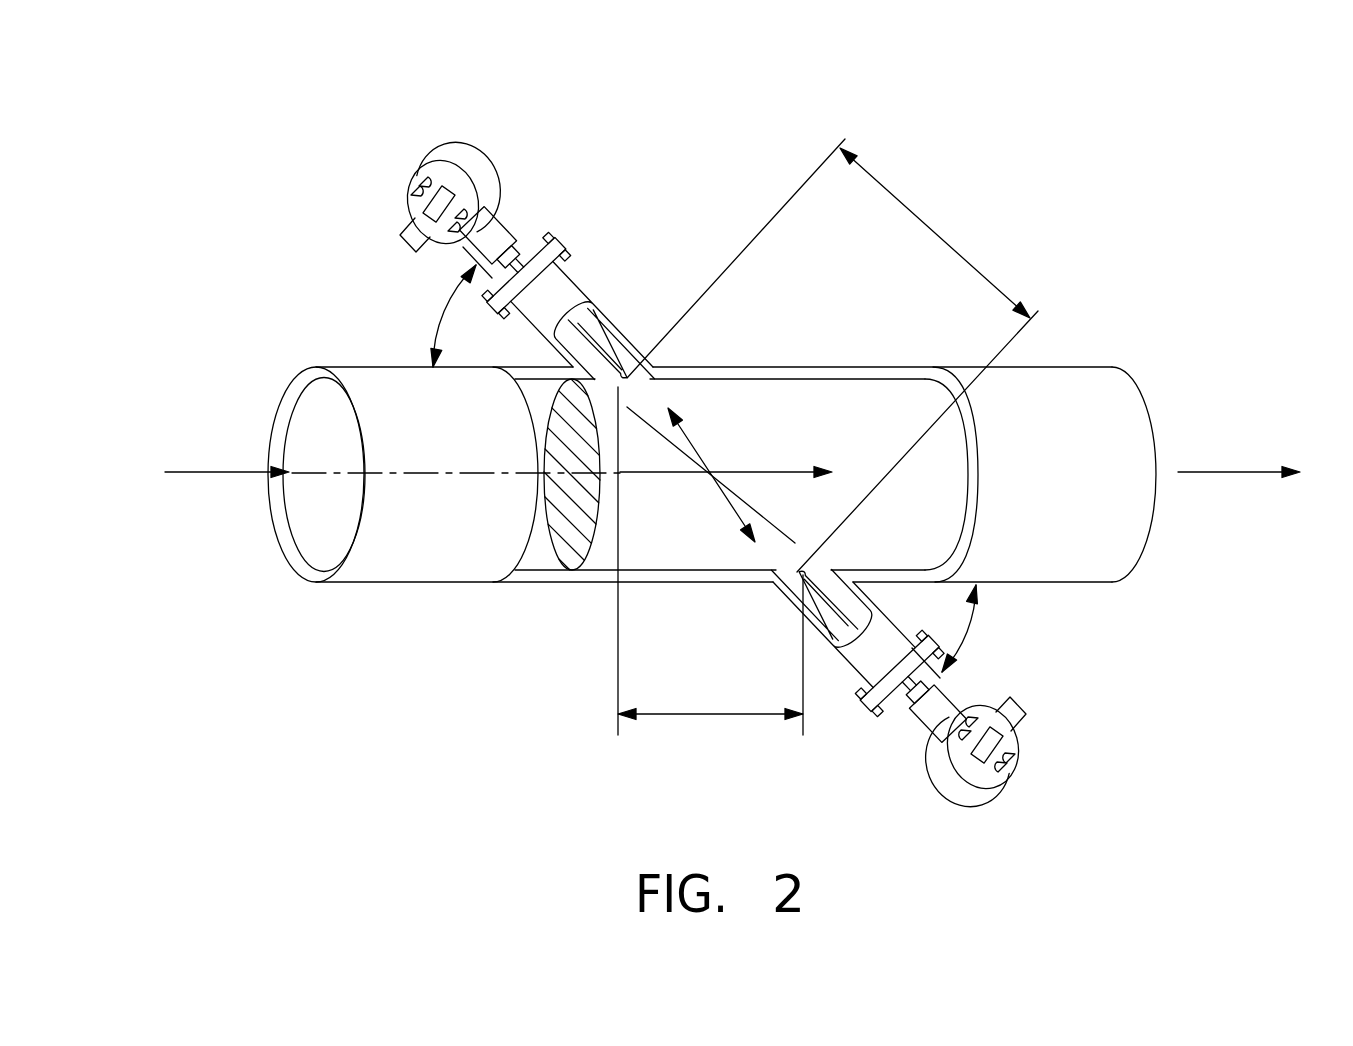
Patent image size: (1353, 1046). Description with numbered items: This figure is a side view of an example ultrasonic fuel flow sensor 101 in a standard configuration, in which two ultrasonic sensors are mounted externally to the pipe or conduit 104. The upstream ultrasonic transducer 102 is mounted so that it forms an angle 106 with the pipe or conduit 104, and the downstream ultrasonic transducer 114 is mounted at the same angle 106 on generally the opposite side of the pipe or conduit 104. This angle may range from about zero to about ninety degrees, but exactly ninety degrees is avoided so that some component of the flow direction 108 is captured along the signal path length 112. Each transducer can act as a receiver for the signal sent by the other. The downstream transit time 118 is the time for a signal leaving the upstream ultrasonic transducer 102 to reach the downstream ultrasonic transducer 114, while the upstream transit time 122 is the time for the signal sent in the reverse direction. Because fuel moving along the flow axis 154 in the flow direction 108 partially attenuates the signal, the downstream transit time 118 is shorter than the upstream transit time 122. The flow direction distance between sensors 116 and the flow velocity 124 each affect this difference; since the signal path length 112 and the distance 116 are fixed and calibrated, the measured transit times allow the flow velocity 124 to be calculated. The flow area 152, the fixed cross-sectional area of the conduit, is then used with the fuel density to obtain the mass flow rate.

The ultrasonic fuel flow sensor 101 is at (1100, 180).
The upstream ultrasonic transducer 102 is at (497, 145).
The pipe or conduit 104 is at (403, 573).
The angle (θ) 106 is at (443, 312).
The flow direction 108 is at (223, 472).
The signal path length (P) 112 is at (935, 232).
The downstream ultrasonic transducer 114 is at (1029, 689).
The flow direction distance between sensors (L) 116 is at (712, 718).
The downstream transit time (tdn) 118 is at (712, 497).
The upstream transit time (tup) 122 is at (710, 450).
The flow velocity (V) 124 is at (767, 473).
The flow area 152 is at (573, 538).
The flow axis 154 is at (487, 470).